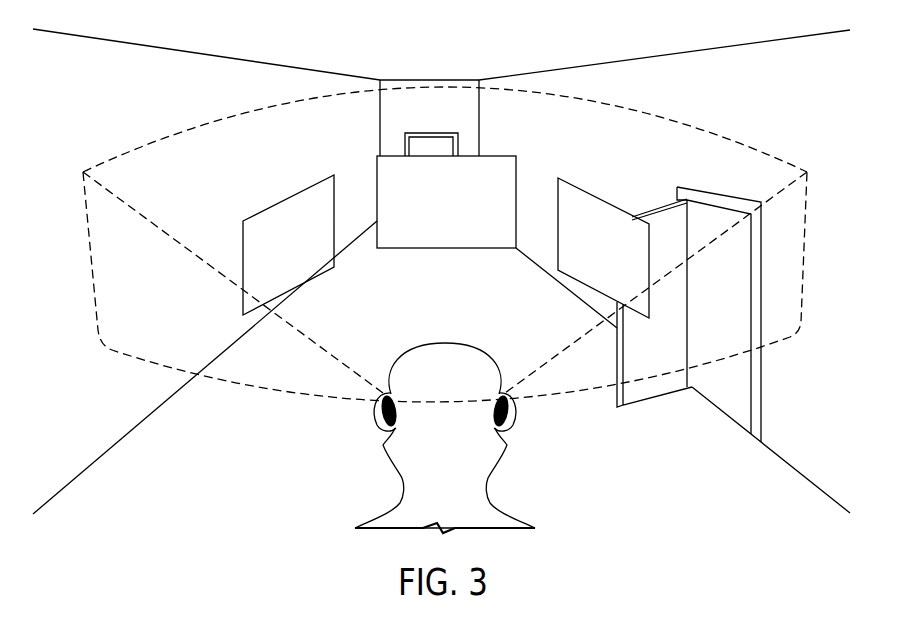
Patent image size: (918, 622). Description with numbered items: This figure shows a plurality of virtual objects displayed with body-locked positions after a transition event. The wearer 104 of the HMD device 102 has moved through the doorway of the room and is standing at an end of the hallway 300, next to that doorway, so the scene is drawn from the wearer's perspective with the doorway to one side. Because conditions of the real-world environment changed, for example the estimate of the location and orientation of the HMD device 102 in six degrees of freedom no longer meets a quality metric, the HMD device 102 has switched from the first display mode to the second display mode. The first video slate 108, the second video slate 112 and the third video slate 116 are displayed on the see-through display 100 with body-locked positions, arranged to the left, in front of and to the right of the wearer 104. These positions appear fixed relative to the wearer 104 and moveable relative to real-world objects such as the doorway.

The hallway 300 is at (619, 44).
The see-through display 100 is at (245, 387).
The HMD device 102 is at (386, 406).
The wearer 104 is at (461, 448).
The first video slate 108 is at (281, 201).
The second video slate 112 is at (488, 156).
The third video slate 116 is at (582, 188).